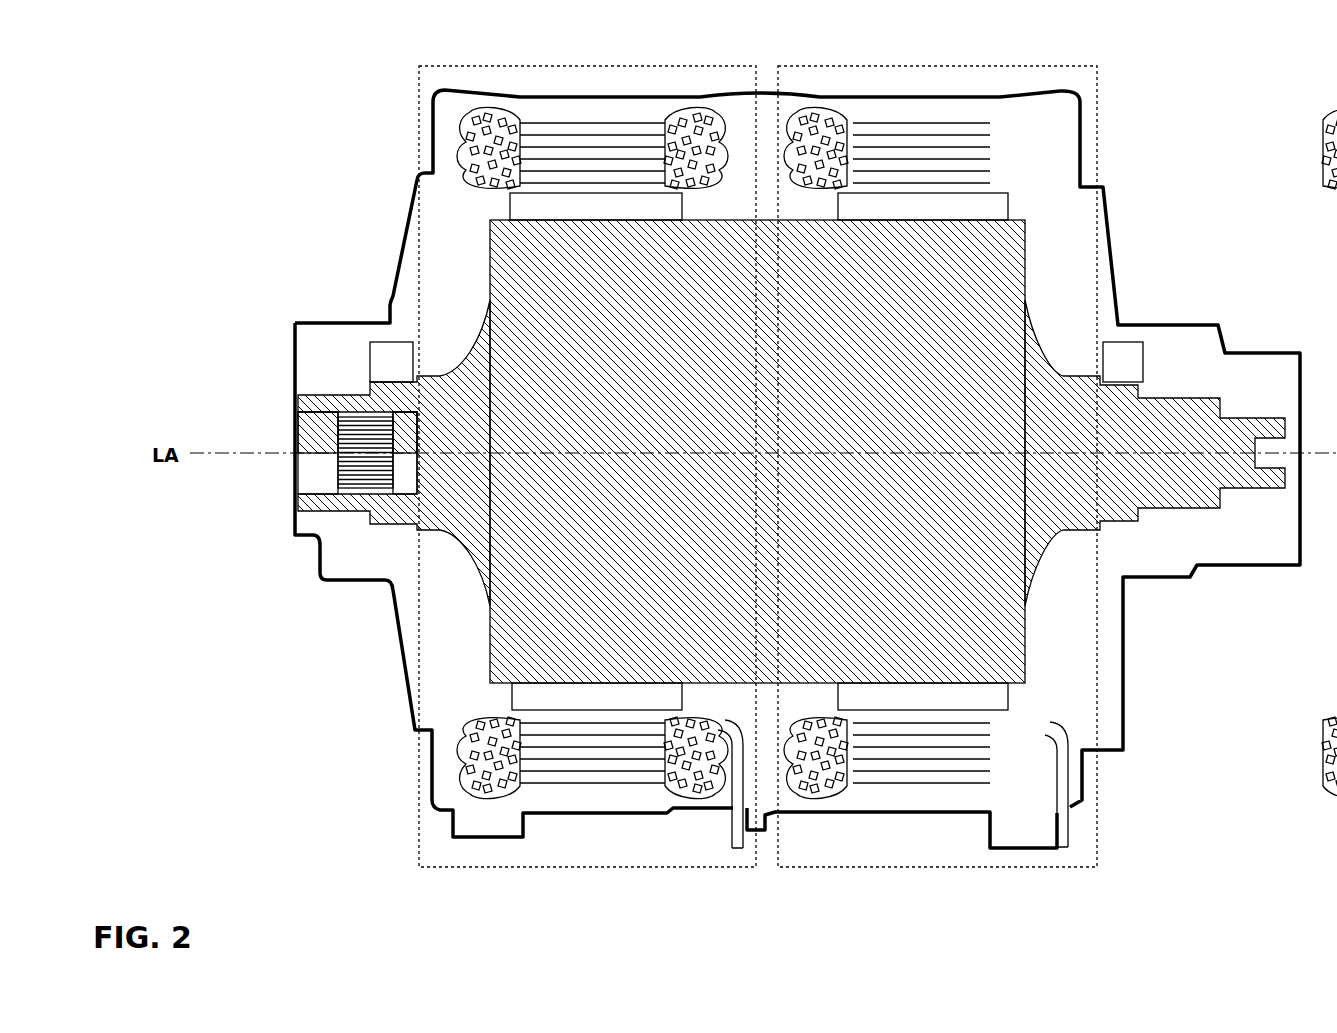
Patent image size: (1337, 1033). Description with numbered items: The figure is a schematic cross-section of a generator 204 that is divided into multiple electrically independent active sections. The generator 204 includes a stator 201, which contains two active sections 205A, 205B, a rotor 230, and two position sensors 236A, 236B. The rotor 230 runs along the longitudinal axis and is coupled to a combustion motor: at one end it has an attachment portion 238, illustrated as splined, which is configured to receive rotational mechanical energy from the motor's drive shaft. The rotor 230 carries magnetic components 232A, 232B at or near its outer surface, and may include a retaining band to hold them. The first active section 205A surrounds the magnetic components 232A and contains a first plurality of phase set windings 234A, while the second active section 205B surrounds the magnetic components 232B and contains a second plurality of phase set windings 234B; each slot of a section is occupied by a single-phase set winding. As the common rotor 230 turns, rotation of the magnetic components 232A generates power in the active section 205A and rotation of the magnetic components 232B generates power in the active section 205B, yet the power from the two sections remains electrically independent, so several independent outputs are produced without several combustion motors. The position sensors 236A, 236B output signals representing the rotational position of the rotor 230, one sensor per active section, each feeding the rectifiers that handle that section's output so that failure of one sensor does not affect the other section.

The generator 204 is at (1218, 86).
The stator 201 is at (1110, 153).
The active section 205A is at (600, 64).
The active section 205B is at (937, 64).
The rotor 230 is at (500, 290).
The magnetic components 232A is at (505, 218).
The magnetic components 232B is at (996, 215).
The first plurality of phase set windings 234A is at (610, 135).
The second plurality of phase set windings 234B is at (960, 135).
The position sensor 236A is at (390, 368).
The position sensor 236B is at (1130, 368).
The attachment portion 238 is at (296, 446).